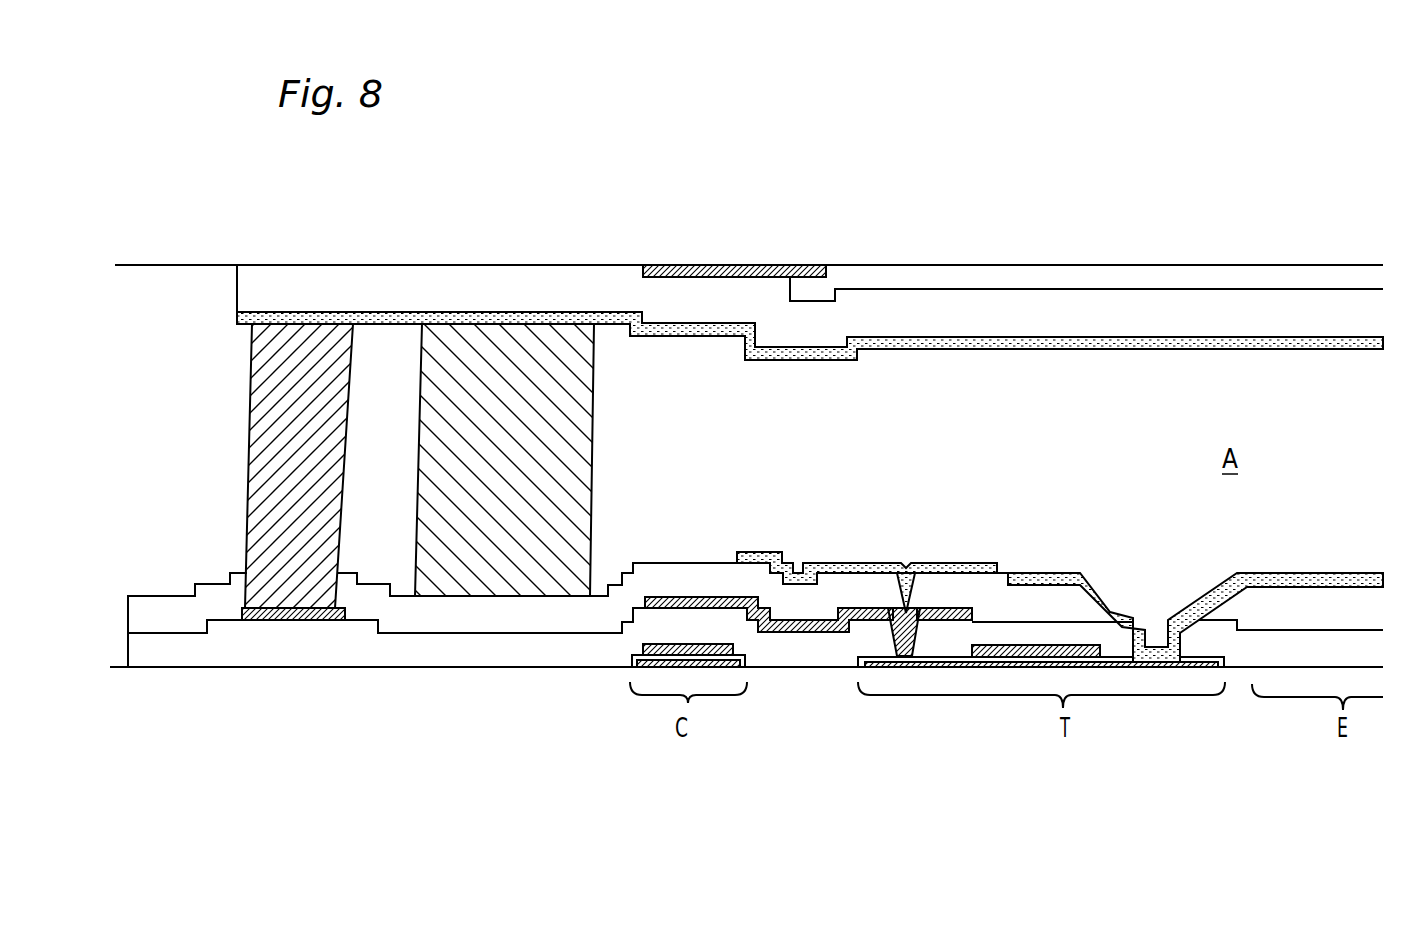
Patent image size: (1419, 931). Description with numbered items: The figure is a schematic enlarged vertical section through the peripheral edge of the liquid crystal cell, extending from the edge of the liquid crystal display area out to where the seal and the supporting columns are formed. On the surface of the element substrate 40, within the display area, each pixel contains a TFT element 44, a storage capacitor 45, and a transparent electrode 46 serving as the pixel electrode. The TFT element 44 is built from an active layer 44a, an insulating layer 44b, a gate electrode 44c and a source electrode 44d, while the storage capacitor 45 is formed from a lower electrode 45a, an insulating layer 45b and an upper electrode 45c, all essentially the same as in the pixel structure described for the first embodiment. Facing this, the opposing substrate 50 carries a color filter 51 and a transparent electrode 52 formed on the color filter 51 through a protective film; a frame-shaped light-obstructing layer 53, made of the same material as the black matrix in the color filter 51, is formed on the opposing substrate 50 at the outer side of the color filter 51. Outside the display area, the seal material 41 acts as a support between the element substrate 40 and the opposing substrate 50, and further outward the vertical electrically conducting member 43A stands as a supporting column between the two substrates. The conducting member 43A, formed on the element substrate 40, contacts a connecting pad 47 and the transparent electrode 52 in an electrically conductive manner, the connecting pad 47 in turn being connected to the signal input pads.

The element substrate 40 is at (793, 776).
The seal material 41 is at (592, 450).
The vertical electrically conducting member 43A is at (245, 465).
The TFT element 44 is at (1041, 621).
The active layer 44a is at (1170, 668).
The insulating layer 44b is at (998, 668).
The gate electrode 44c is at (1083, 637).
The source electrode 44d is at (948, 608).
The storage capacitor 45 is at (748, 618).
The lower electrode 45a is at (650, 668).
The insulating layer 45b is at (750, 657).
The upper electrode 45c is at (687, 644).
The transparent electrode 46 is at (1330, 573).
The connecting pad 47 is at (305, 622).
The opposing substrate 50 is at (749, 295).
The color filter 51 is at (1226, 265).
The transparent electrode 52 is at (1005, 349).
The light-obstructing layer 53 is at (722, 265).